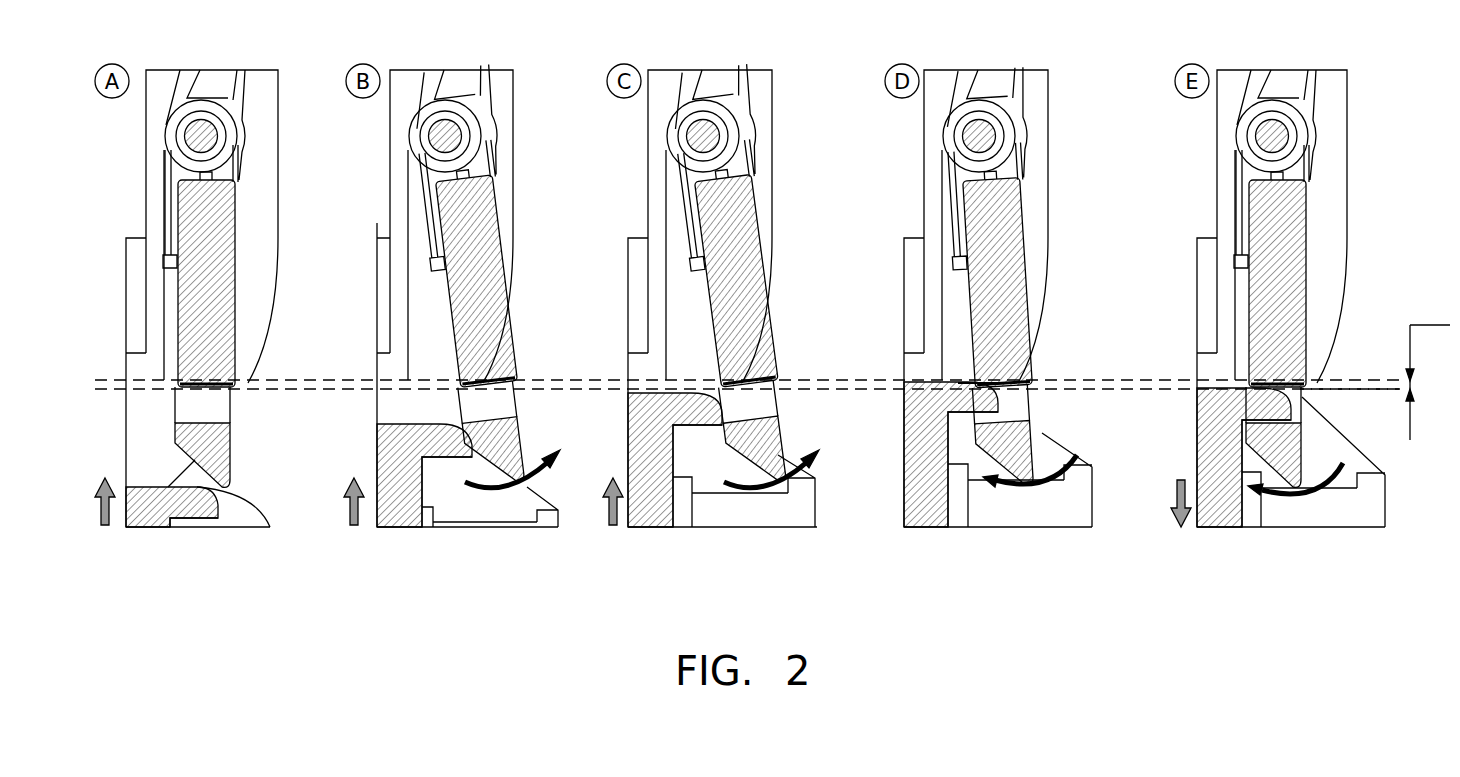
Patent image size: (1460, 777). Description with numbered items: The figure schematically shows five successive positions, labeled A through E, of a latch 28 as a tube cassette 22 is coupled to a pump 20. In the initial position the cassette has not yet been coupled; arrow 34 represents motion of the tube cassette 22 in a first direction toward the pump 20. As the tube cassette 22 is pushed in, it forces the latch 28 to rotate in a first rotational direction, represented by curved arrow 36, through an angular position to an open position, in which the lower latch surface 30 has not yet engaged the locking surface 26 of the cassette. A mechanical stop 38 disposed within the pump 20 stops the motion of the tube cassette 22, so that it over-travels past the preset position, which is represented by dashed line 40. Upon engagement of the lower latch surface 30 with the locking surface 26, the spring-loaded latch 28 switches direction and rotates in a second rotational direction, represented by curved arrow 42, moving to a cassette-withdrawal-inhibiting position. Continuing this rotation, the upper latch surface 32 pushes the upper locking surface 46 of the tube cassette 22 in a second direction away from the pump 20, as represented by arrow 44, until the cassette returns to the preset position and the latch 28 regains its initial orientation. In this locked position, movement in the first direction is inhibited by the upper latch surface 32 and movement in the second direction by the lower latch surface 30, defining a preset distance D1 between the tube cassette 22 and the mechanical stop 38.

The pump 20 is at (272, 163).
The tube cassette 22 is at (238, 522).
The locking surface 26 is at (197, 522).
The latch 28 is at (218, 317).
The lower latch surface 30 is at (210, 420).
The upper latch surface 32 is at (198, 392).
The arrow 34 is at (105, 525).
The curved arrow 36 is at (522, 488).
The mechanical stop 38 is at (143, 383).
The dashed line 40 is at (1372, 390).
The curved arrow 42 is at (1040, 493).
The arrow 44 is at (1178, 528).
The upper locking surface 46 is at (977, 382).
The preset distance D1 is at (1428, 369).